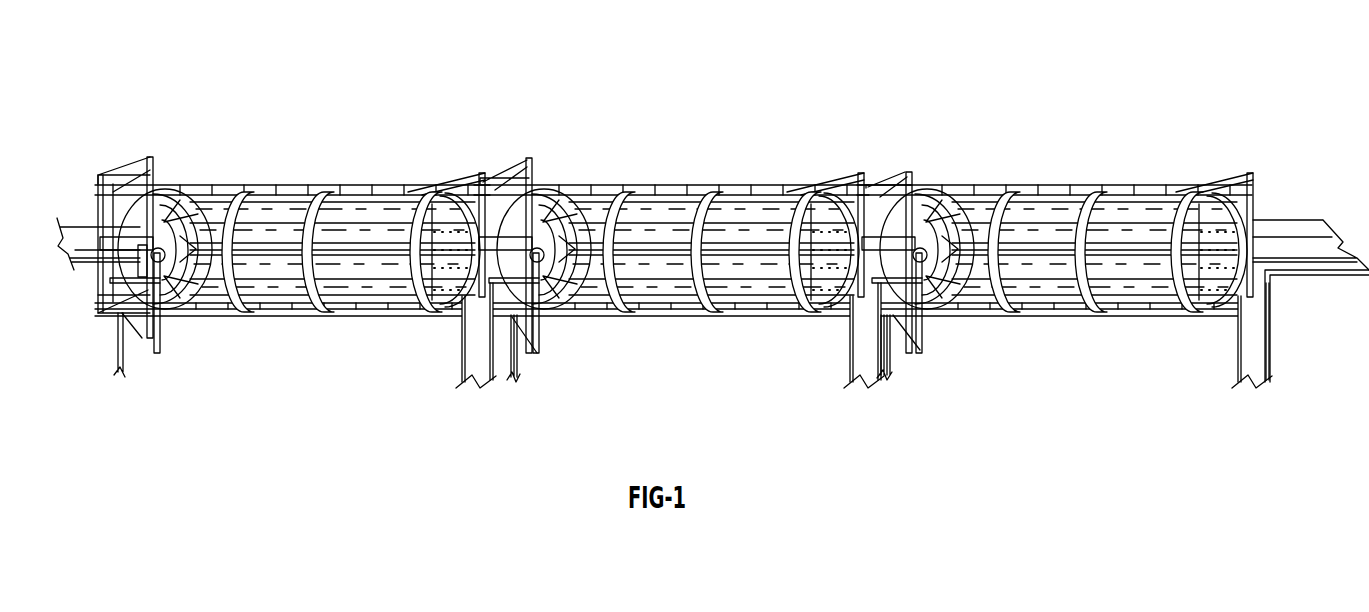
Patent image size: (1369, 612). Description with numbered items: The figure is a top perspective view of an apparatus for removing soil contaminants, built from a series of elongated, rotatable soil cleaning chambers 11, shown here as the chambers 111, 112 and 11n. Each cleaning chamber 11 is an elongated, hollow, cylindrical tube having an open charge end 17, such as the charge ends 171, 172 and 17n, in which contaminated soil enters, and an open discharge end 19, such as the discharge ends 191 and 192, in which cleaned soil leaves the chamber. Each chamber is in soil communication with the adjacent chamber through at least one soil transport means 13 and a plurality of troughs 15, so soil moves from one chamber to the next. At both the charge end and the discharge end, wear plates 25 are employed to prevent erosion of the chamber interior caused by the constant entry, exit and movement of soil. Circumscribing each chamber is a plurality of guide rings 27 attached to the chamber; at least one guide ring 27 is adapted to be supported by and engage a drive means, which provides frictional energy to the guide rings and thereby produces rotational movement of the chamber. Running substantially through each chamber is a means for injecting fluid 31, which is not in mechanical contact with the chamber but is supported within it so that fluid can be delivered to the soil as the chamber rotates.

The soil cleaning chamber 11 is at (713, 187).
The soil cleaning chamber 11n is at (305, 133).
The soil cleaning chamber 112 is at (672, 140).
The soil cleaning chamber 111 is at (1037, 155).
The soil transport means 13 is at (540, 176).
The trough 15 is at (480, 355).
The charge end 17 is at (550, 296).
The charge end 17n is at (175, 313).
The charge end 172 is at (550, 282).
The charge end 171 is at (938, 312).
The discharge end 19 is at (492, 172).
The discharge end 192 is at (872, 172).
The discharge end 191 is at (1256, 234).
The wear plate 25 is at (452, 232).
The guide ring 27 is at (410, 193).
The means for injecting fluid 31 is at (143, 338).